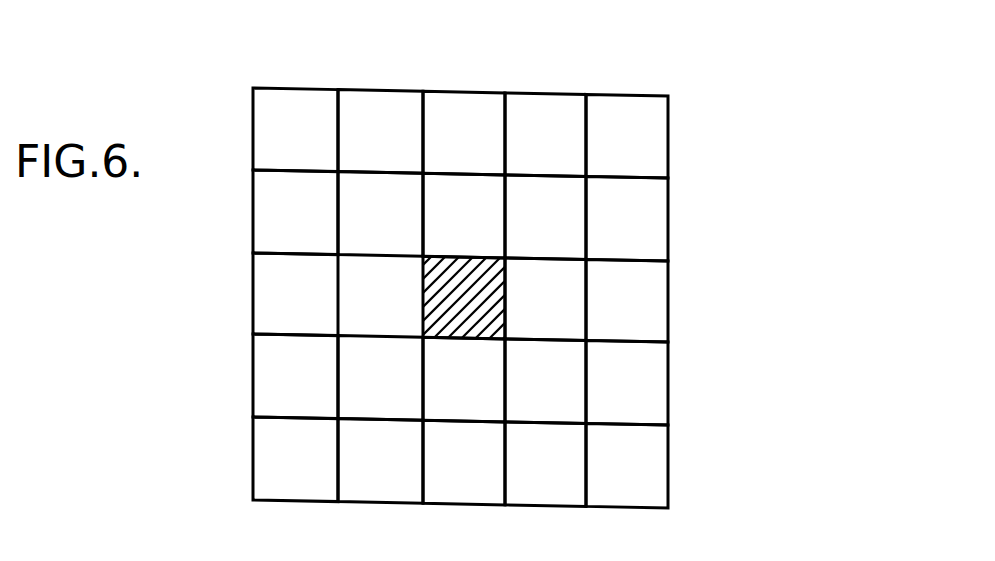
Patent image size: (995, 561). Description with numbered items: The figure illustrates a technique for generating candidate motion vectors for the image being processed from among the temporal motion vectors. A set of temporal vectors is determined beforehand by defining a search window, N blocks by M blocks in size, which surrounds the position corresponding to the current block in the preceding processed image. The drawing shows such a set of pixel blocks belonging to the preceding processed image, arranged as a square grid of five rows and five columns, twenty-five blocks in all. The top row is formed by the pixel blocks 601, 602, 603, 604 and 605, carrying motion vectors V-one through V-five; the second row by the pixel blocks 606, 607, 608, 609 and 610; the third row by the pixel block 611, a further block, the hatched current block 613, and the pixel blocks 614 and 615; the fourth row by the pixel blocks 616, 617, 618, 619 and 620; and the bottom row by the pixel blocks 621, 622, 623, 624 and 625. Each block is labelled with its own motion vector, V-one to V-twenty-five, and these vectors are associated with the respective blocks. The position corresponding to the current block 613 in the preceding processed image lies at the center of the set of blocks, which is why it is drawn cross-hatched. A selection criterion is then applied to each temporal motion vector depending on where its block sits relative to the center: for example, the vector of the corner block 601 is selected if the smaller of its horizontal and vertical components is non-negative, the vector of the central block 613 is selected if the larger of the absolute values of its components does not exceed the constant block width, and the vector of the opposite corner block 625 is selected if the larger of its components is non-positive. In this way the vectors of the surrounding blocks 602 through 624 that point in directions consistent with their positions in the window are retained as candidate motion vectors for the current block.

The pixel block 601 is at (272, 100).
The pixel block 602 is at (357, 123).
The pixel block 603 is at (441, 123).
The pixel block 604 is at (528, 120).
The pixel block 605 is at (609, 112).
The pixel block 606 is at (268, 200).
The pixel block 607 is at (353, 218).
The pixel block 608 is at (442, 196).
The pixel block 609 is at (555, 191).
The pixel block 610 is at (638, 239).
The pixel block 611 is at (270, 280).
The current block 613 is at (480, 273).
The pixel block 614 is at (567, 322).
The pixel block 615 is at (643, 332).
The pixel block 616 is at (268, 366).
The pixel block 617 is at (358, 352).
The pixel block 618 is at (465, 400).
The pixel block 619 is at (567, 395).
The pixel block 620 is at (643, 358).
The pixel block 621 is at (275, 453).
The pixel block 622 is at (382, 483).
The pixel block 623 is at (458, 483).
The pixel block 624 is at (528, 483).
The pixel block 625 is at (610, 487).